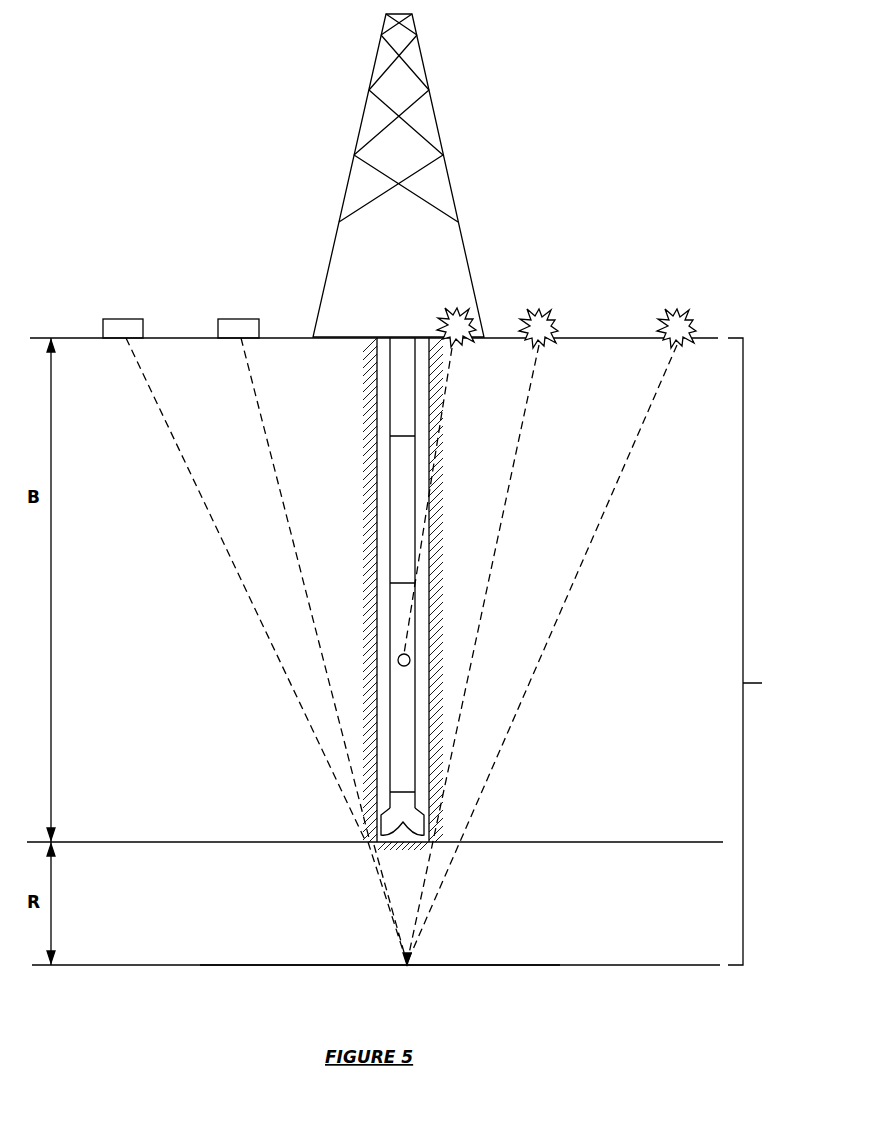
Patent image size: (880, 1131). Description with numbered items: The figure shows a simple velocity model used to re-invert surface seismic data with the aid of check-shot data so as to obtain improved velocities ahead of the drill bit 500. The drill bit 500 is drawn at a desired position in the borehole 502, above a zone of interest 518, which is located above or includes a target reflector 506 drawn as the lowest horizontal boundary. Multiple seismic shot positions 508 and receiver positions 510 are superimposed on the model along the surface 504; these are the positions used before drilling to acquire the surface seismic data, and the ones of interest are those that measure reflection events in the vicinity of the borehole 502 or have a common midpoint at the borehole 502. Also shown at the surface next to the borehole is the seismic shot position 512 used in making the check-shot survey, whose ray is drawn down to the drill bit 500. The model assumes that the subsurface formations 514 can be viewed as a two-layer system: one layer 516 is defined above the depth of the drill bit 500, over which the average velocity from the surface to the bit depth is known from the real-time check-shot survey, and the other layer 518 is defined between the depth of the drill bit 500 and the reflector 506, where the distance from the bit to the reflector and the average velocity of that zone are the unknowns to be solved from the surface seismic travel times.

The drill bit 500 is at (376, 838).
The borehole 502 is at (374, 507).
The earth surface 504 is at (72, 338).
The target reflector 506 is at (265, 965).
The seismic shot positions 508 is at (675, 305).
The receiver positions 510 is at (240, 325).
The seismic shot position 512 is at (455, 307).
The subsurface formations 514 is at (766, 651).
The layer 516 is at (375, 724).
The zone of interest 518 is at (376, 918).